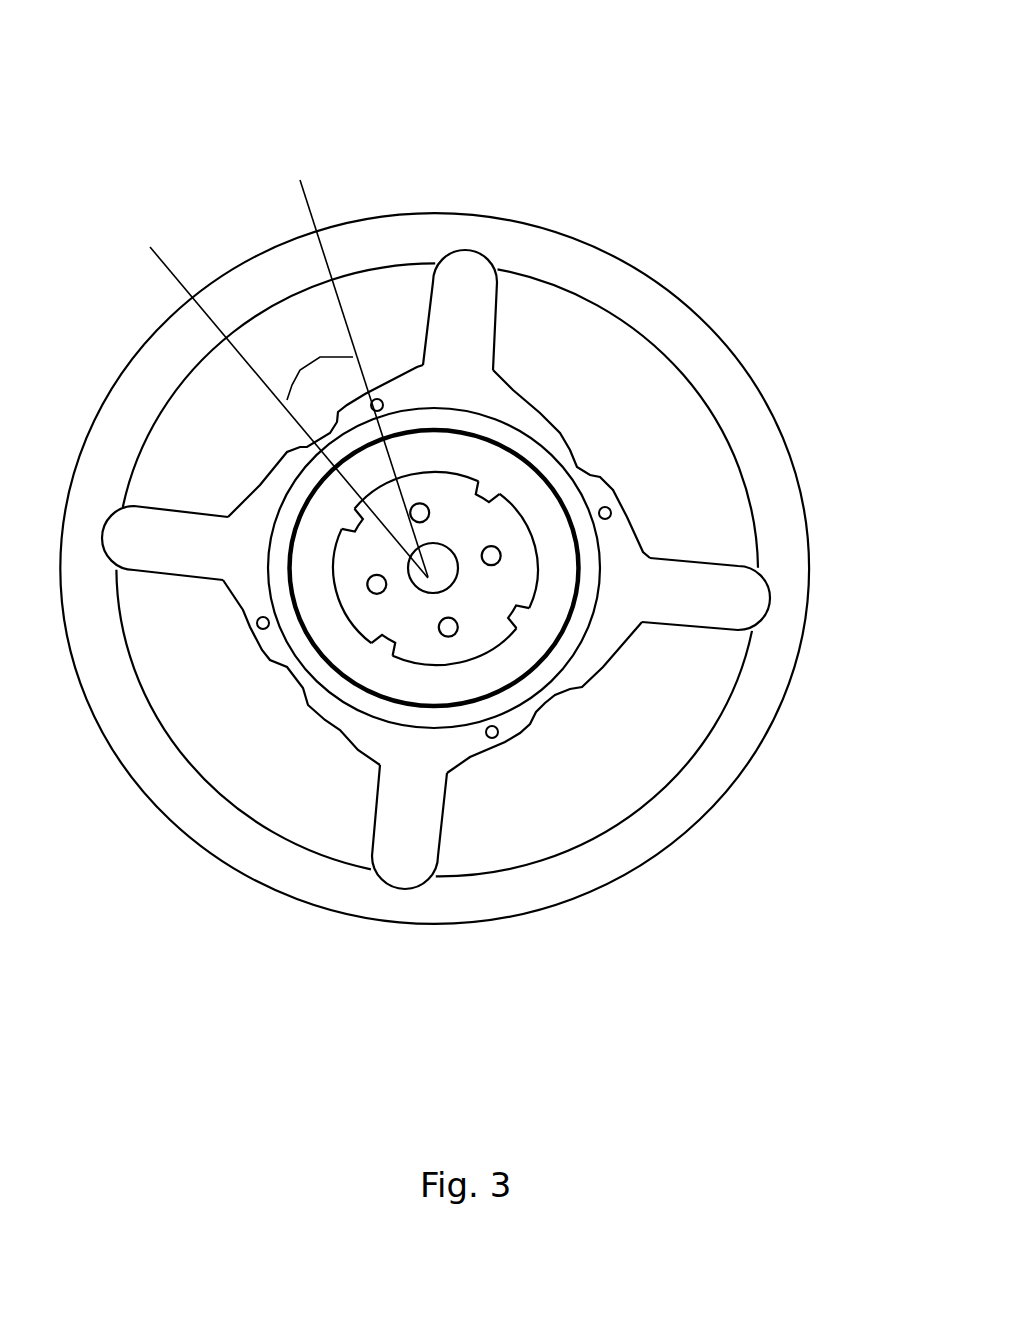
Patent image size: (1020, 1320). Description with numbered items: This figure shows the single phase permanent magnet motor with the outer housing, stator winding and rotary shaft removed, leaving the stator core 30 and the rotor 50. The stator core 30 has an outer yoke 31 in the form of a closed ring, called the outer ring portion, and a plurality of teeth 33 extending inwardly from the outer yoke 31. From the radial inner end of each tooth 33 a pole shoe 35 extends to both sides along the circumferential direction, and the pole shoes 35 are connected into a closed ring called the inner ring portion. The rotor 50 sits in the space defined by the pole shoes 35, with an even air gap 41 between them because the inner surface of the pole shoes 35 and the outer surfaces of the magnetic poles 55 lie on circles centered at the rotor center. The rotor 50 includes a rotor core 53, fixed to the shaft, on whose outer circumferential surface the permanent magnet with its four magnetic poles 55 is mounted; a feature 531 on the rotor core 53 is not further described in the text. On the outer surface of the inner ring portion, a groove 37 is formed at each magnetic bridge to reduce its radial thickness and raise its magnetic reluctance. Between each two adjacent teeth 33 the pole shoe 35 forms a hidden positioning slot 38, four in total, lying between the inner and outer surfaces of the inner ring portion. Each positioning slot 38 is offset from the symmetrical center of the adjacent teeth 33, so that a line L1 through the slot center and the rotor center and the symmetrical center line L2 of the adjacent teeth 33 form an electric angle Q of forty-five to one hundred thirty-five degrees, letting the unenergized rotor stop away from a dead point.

The stator core 30 is at (434, 492).
The outer yoke 31 is at (385, 215).
The tooth 33 is at (473, 293).
The pole shoe 35 is at (513, 413).
The groove 37 is at (560, 700).
The positioning slot 38 is at (253, 630).
The air gap 41 is at (507, 443).
The rotor 50 is at (380, 741).
The rotor core 53 is at (352, 720).
The notch 531 is at (348, 522).
The magnetic pole 55 is at (467, 678).
The line L1 is at (341, 364).
The symmetrical center line L2 is at (273, 398).
The electric angle Q is at (314, 365).